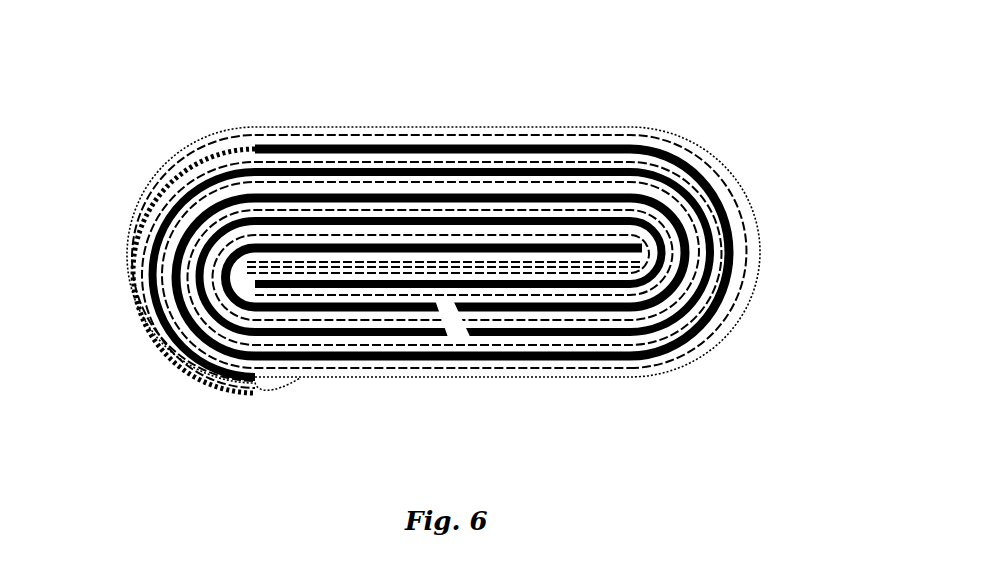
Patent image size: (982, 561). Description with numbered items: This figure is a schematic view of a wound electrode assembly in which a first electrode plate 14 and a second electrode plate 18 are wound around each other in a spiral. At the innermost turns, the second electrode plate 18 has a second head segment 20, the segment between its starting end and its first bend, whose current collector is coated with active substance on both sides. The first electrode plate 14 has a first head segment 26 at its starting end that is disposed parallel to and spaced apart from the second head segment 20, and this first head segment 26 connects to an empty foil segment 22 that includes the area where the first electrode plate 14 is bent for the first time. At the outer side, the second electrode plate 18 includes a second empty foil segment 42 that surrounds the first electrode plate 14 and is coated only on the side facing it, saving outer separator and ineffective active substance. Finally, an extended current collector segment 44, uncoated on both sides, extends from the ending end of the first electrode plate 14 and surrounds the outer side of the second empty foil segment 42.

The first electrode plate 14 is at (225, 228).
The second electrode plate 18 is at (240, 307).
The second head segment 20 is at (615, 250).
The empty foil segment 22 is at (688, 235).
The first head segment 26 is at (373, 287).
The second empty foil segment 42 is at (578, 147).
The extended current collector segment 44 is at (155, 257).